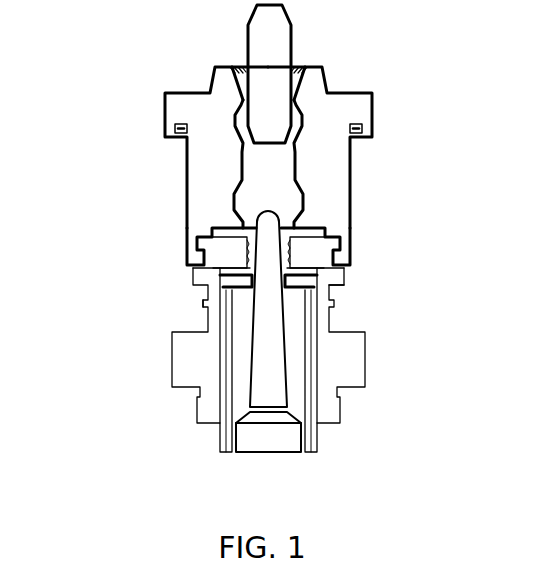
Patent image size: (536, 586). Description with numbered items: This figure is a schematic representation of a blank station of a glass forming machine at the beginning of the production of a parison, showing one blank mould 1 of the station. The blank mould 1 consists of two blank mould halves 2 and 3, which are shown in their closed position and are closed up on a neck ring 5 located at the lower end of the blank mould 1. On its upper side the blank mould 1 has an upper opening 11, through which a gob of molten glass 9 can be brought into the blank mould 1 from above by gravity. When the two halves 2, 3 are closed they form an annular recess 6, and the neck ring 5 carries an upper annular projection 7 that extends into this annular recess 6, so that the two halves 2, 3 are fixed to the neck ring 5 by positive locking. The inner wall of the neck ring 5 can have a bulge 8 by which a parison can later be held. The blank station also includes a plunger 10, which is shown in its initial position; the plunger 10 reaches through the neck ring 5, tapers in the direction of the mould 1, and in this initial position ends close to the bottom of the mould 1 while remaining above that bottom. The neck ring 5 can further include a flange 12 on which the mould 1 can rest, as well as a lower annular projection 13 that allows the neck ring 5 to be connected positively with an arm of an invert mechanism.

The blank mould 1 is at (97, 162).
The blank mould half 2 is at (172, 118).
The blank mould half 3 is at (343, 100).
The neck ring 5 is at (232, 250).
The annular recess 6 is at (187, 228).
The upper annular projection 7 is at (334, 238).
The bulge 8 is at (292, 243).
The gob of molten glass 9 is at (283, 22).
The plunger 10 is at (275, 333).
The upper opening 11 is at (240, 76).
The flange 12 is at (343, 278).
The lower annular projection 13 is at (200, 308).